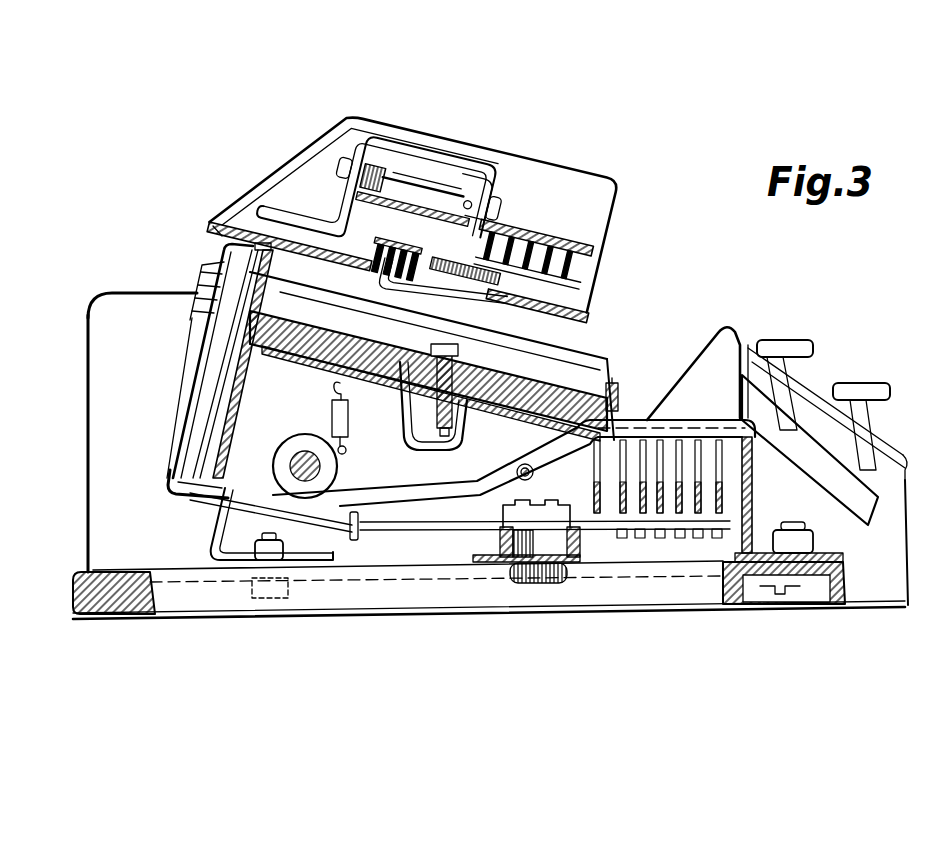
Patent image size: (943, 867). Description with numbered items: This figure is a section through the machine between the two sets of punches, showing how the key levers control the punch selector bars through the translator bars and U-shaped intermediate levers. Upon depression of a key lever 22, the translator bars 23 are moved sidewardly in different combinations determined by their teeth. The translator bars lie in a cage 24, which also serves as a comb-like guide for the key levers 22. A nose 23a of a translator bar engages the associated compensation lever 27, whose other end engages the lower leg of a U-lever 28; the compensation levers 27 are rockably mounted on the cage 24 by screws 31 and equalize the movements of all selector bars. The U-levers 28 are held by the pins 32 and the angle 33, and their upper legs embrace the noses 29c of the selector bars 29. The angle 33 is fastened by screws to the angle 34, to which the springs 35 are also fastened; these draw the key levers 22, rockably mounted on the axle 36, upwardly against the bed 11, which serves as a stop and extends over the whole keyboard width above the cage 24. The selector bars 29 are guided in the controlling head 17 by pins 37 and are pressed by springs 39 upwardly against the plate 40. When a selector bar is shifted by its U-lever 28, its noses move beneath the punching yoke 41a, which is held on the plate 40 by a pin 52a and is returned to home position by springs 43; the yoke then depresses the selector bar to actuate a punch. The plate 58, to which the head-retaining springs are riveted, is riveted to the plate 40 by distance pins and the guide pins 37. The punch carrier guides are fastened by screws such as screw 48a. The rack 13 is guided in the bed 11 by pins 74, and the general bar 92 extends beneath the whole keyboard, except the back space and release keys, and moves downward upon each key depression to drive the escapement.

The controlling head 17 is at (612, 200).
The plate 58 is at (217, 232).
The punching yoke 41a is at (423, 153).
The springs 43 is at (371, 178).
The springs 39 is at (447, 200).
The pin 52a is at (482, 180).
The plate 40 is at (540, 243).
The selector bar 29 is at (577, 270).
The pins 37 is at (382, 248).
The nose 29c is at (500, 280).
The rack 13 is at (448, 388).
The pins 74 is at (452, 370).
The screw 48a is at (612, 408).
The springs 35 is at (333, 413).
The bed 11 is at (233, 320).
The angle 33 is at (178, 440).
The pins 32 is at (217, 408).
The U-lever 28 is at (170, 470).
The axle 36 is at (306, 481).
The compensation lever 27 is at (453, 530).
The general bar 92 is at (521, 481).
The screws 31 is at (530, 500).
The key lever 22 is at (675, 433).
The translator bars 23 is at (750, 426).
The nose 23a is at (717, 538).
The cage 24 is at (753, 518).
The angle 34 is at (240, 538).